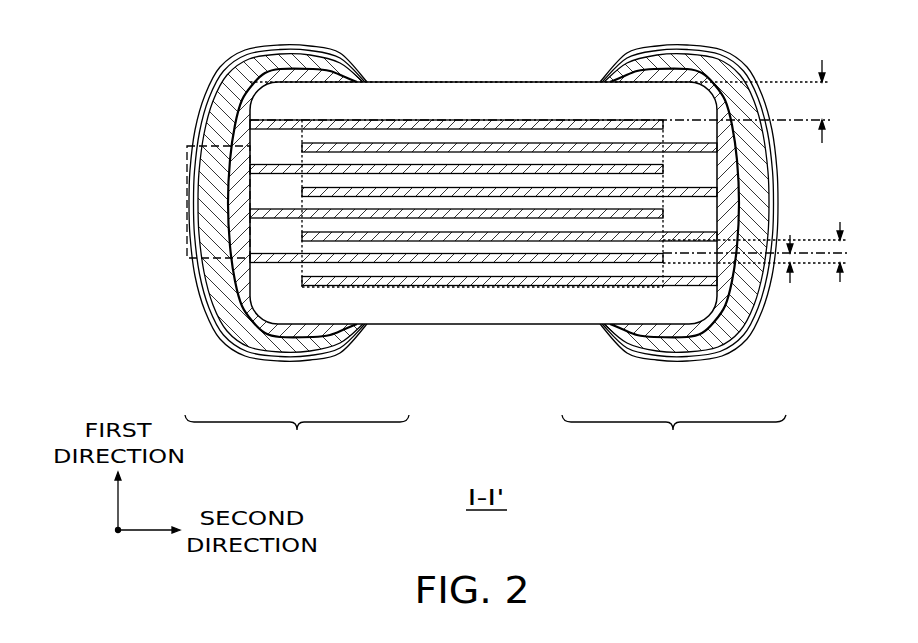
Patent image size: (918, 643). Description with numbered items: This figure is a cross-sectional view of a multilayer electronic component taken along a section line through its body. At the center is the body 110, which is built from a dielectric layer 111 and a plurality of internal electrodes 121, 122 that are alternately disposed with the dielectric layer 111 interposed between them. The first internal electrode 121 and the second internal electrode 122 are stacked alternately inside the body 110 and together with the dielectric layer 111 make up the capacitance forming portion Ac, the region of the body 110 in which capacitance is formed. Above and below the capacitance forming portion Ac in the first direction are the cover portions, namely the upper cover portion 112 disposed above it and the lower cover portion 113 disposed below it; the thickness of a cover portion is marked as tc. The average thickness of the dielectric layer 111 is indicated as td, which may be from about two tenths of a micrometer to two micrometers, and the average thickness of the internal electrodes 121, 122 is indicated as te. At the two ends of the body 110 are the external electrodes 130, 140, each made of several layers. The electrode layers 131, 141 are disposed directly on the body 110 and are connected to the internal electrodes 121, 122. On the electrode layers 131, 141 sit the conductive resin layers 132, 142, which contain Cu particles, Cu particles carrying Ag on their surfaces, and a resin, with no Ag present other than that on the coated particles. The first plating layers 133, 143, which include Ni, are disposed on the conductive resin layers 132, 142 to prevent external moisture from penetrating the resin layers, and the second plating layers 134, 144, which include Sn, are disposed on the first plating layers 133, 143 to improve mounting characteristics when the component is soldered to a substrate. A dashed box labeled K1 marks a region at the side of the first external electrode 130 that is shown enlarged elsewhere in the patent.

The body 110 is at (442, 80).
The dielectric layer 111 is at (380, 160).
The upper cover portion 112 is at (498, 98).
The lower cover portion 113 is at (467, 302).
The first internal electrode 121 is at (547, 125).
The second internal electrode 122 is at (597, 147).
The external electrode 130 is at (297, 438).
The electrode layer 131 is at (268, 328).
The conductive resin layer 132 is at (287, 345).
The first plating layer 133 is at (313, 357).
The second plating layer 134 is at (345, 350).
The external electrode 140 is at (674, 438).
The electrode layer 141 is at (628, 328).
The conductive resin layer 142 is at (648, 330).
The first plating layer 143 is at (686, 350).
The second plating layer 144 is at (721, 350).
The capacitance forming portion Ac is at (533, 288).
The region K1 is at (187, 199).
The cover portion thickness tc is at (549, 101).
The average thickness of the dielectric layer td is at (767, 252).
The average thickness of the internal electrodes te is at (804, 259).